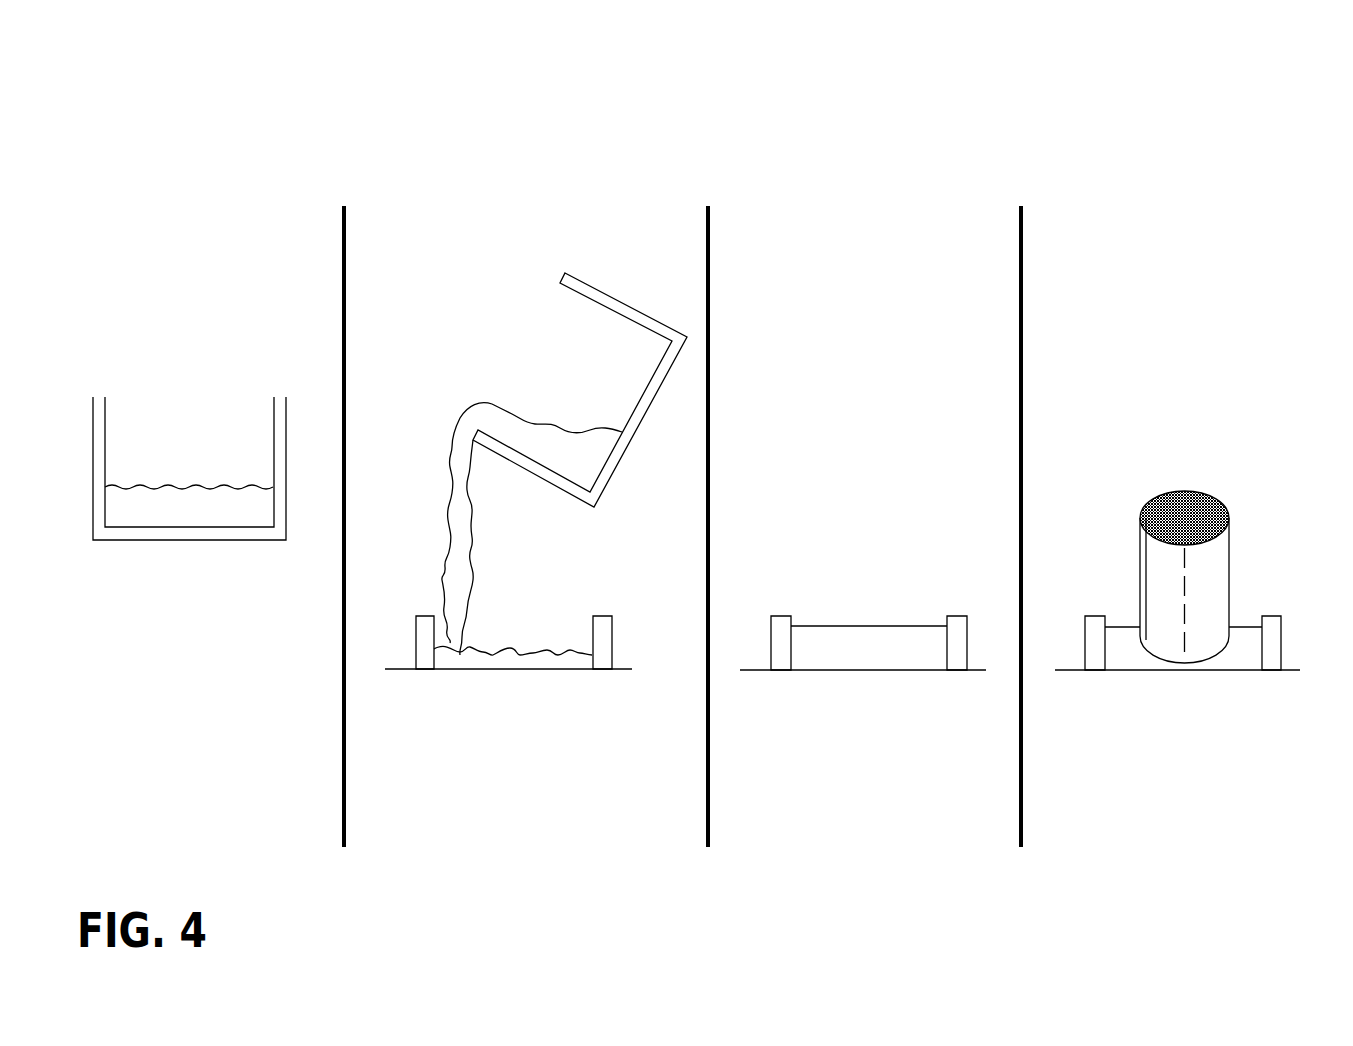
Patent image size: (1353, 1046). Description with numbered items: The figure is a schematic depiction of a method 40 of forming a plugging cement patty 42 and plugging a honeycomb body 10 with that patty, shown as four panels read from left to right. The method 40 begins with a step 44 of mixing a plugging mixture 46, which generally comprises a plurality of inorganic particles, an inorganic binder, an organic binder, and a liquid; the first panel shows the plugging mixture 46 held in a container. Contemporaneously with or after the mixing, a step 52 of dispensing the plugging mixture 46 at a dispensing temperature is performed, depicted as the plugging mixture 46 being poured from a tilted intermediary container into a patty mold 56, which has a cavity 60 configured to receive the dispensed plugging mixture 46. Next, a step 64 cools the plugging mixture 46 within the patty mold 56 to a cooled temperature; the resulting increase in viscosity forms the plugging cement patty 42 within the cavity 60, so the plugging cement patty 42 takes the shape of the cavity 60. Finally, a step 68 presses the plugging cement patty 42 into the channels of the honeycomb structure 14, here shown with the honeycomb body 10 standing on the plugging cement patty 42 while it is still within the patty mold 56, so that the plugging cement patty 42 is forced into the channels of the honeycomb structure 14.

The method 40 is at (790, 130).
The step of mixing 44 is at (180, 244).
The step of dispensing 52 is at (513, 244).
The step of cooling 64 is at (853, 244).
The step of pressing 68 is at (1163, 244).
The plugging mixture 46 is at (173, 502).
The patty mold 56 is at (422, 638).
The plugging cement patty 42 is at (826, 632).
The cavity 60 is at (497, 640).
The honeycomb body 10 is at (1199, 565).
The honeycomb structure 14 is at (1198, 495).